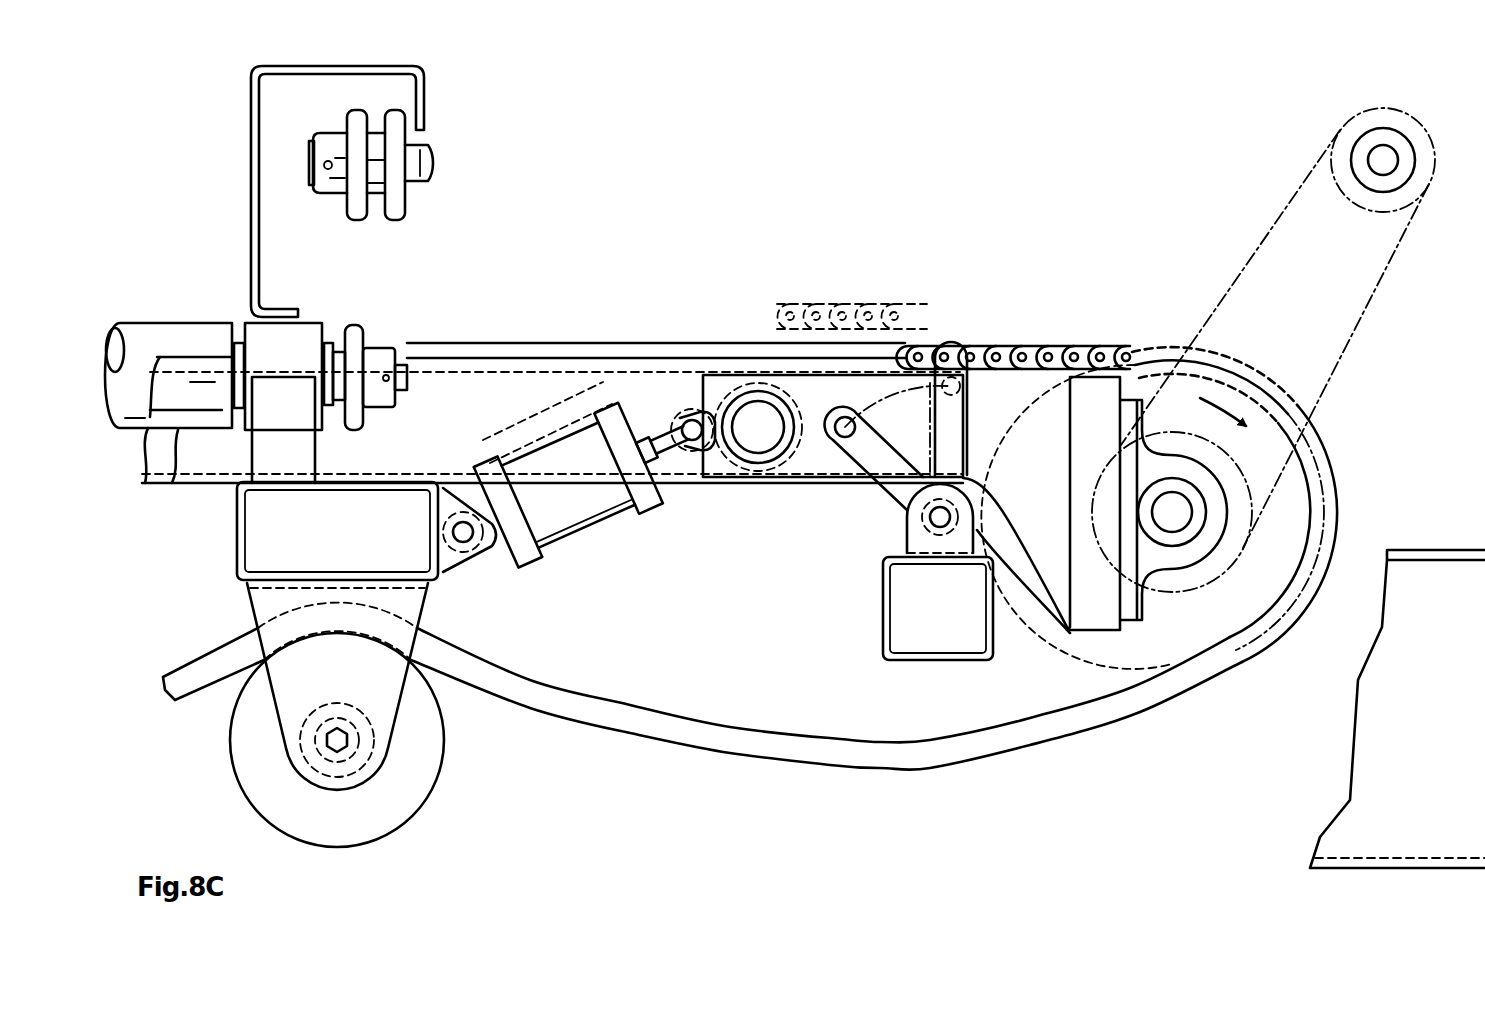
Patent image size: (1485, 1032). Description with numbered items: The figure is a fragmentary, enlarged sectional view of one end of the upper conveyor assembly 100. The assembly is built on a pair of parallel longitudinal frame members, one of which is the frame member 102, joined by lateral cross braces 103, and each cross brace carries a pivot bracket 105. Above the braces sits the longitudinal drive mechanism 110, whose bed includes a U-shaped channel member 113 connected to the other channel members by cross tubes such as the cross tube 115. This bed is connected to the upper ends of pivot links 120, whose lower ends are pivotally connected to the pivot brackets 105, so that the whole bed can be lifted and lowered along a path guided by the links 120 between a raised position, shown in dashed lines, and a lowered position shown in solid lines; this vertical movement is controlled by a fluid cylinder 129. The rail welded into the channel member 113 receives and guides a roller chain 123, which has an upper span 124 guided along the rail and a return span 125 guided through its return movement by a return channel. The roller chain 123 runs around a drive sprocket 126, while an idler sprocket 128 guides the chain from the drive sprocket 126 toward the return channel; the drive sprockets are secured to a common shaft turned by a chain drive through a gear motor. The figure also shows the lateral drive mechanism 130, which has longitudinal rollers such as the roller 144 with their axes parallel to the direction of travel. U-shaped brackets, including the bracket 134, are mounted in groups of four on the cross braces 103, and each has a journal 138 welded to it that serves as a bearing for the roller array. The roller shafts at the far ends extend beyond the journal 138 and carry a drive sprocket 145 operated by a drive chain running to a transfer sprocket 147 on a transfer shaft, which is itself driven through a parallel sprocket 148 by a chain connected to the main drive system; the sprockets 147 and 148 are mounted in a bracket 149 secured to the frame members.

The upper conveyor assembly 100 is at (766, 158).
The longitudinal frame member 102 is at (1452, 547).
The lateral cross brace 103 is at (238, 547).
The pivot bracket 105 is at (1023, 553).
The longitudinal drive mechanism 110 is at (929, 264).
The U-shaped channel member 113 is at (210, 483).
The cross tube 115 is at (778, 455).
The pivot link 120 is at (880, 480).
The roller chain 123 is at (834, 299).
The upper span 124 is at (957, 360).
The return span 125 is at (545, 690).
The drive sprocket 126 is at (1292, 503).
The idler sprocket 128 is at (432, 792).
The hydraulic cylinder 129 is at (583, 537).
The lateral drive mechanism 130 is at (203, 312).
The U-shaped bracket 134 is at (318, 442).
The journal 138 is at (297, 337).
The roller 144 is at (178, 432).
The drive sprocket 145 is at (363, 328).
The transfer sprocket 147 is at (348, 212).
The parallel sprocket 148 is at (412, 192).
The bracket 149 is at (428, 82).